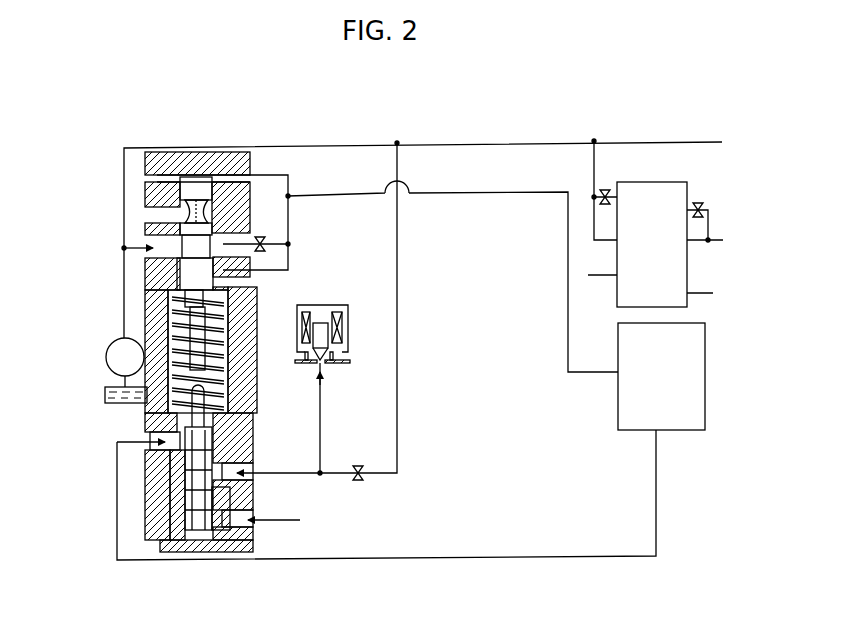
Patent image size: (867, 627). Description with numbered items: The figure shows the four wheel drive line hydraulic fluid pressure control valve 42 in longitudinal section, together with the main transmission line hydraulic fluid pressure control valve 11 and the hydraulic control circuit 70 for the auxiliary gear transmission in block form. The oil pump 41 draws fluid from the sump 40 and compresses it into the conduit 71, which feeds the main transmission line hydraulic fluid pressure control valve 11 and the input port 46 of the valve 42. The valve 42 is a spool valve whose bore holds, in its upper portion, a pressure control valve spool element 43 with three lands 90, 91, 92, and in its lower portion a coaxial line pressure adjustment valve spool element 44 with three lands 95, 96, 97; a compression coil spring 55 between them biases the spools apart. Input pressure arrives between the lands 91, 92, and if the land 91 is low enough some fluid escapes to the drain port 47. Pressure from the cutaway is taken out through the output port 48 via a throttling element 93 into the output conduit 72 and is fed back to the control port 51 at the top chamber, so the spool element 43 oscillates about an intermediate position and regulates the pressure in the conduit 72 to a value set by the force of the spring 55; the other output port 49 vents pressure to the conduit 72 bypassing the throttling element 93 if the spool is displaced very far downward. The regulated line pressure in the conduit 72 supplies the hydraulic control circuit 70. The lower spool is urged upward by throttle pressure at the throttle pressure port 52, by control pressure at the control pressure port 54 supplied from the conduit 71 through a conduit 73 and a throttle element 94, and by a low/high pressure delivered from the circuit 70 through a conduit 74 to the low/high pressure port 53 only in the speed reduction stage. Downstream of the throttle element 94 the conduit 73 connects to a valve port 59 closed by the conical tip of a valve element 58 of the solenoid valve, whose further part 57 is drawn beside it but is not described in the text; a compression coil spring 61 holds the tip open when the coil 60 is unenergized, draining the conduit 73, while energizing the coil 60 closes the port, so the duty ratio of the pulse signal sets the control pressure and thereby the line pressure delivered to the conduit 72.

The main transmission line hydraulic fluid pressure control valve 11 is at (645, 182).
The sump 40 is at (105, 400).
The oil pump 41 is at (106, 357).
The four wheel drive line hydraulic fluid pressure control valve 42 is at (234, 300).
The pressure control valve spool element 43 is at (222, 222).
The line pressure adjustment valve spool element 44 is at (235, 428).
The input port 46 is at (150, 283).
The drain port 47 is at (150, 215).
The output port 48 is at (230, 240).
The output port 49 is at (248, 270).
The control port 51 is at (244, 170).
The throttle pressure port 52 is at (248, 542).
The low/high pressure port 53 is at (172, 453).
The control pressure port 54 is at (236, 470).
The compression coil spring 55 is at (232, 330).
The solenoid coil 57 is at (331, 354).
The valve element 58 is at (349, 352).
The valve port 59 is at (320, 363).
The electromagnetic solenoid valve coil 60 is at (348, 328).
The compression coil spring 61 is at (304, 362).
The hydraulic control circuit 70 is at (705, 412).
The conduit 71 is at (124, 197).
The output conduit 72 is at (427, 192).
The conduit 73 is at (400, 396).
The conduit 74 is at (458, 557).
The land 90 is at (195, 188).
The land 91 is at (147, 258).
The land 92 is at (150, 285).
The throttling element 93 is at (268, 243).
The throttle element 94 is at (365, 480).
The land 95 is at (152, 427).
The land 96 is at (167, 450).
The land 97 is at (166, 528).